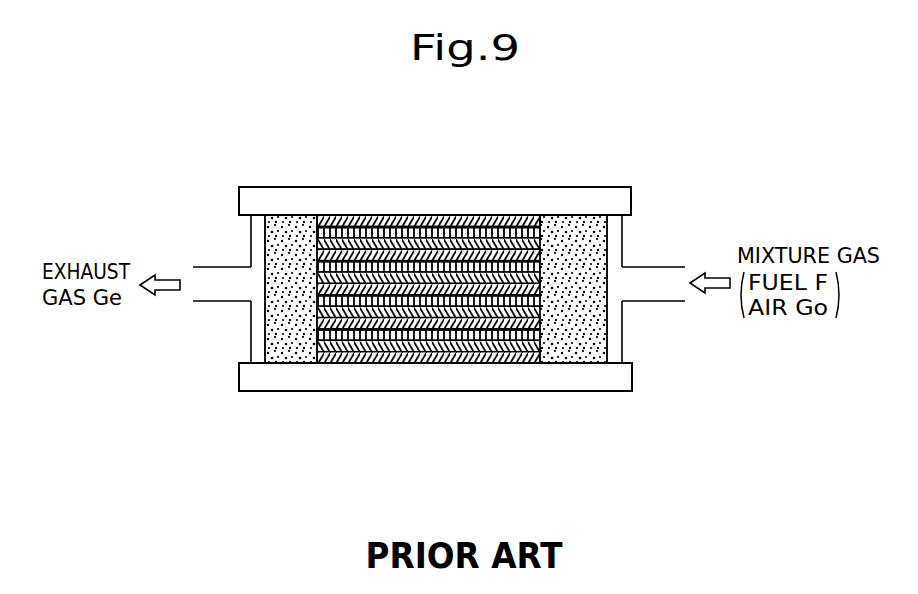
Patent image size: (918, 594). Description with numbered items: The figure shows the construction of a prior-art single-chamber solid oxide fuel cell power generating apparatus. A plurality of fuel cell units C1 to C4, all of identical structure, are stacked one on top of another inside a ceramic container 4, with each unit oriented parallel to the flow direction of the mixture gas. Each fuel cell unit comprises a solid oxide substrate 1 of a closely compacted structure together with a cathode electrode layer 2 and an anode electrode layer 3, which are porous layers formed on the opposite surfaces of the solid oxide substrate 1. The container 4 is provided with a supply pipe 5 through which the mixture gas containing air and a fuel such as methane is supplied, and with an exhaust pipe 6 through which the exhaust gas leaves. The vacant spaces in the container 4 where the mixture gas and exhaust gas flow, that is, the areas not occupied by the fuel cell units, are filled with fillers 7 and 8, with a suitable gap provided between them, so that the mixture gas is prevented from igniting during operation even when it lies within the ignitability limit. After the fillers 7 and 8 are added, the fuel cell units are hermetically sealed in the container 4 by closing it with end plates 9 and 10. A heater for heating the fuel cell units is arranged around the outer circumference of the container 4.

The solid oxide substrate 1 is at (396, 228).
The cathode electrode layer 2 is at (366, 222).
The anode electrode layer 3 is at (428, 238).
The ceramic container 4 is at (598, 196).
The supply pipe 5 is at (663, 268).
The exhaust pipe 6 is at (210, 268).
The filler 7 is at (575, 358).
The filler 8 is at (290, 358).
The end plate 9 is at (621, 348).
The end plate 10 is at (250, 340).
The fuel cell unit C1 is at (430, 128).
The fuel cell unit C4 is at (510, 453).